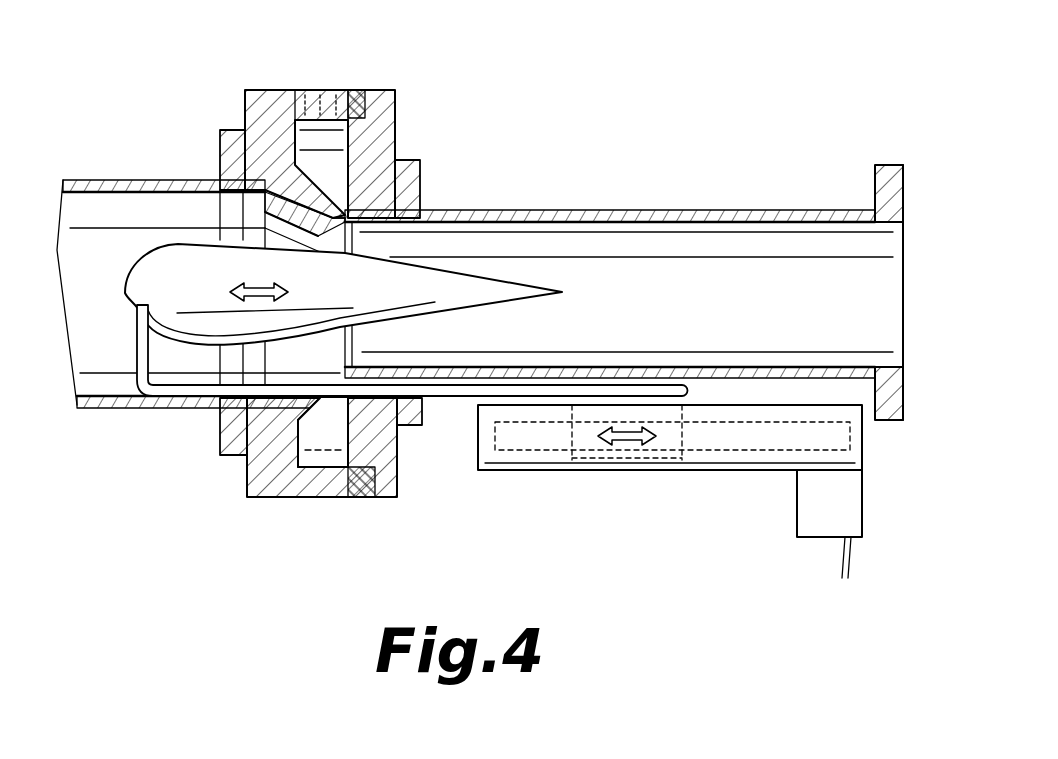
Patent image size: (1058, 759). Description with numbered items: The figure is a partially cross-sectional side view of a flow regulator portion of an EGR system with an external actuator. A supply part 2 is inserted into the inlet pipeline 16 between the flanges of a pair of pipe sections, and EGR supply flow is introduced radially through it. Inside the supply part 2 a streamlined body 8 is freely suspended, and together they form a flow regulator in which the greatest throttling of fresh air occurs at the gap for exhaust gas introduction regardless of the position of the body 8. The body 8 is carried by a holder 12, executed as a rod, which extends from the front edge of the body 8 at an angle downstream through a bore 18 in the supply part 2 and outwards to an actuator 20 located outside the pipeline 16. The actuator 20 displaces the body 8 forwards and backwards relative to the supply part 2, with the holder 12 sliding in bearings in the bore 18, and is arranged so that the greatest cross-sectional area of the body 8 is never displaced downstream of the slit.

The supply part 2 is at (258, 523).
The streamlined body 8 is at (172, 252).
The holder 12 is at (185, 385).
The pipeline 16 is at (517, 192).
The bore 18 is at (412, 418).
The actuator 20 is at (678, 502).